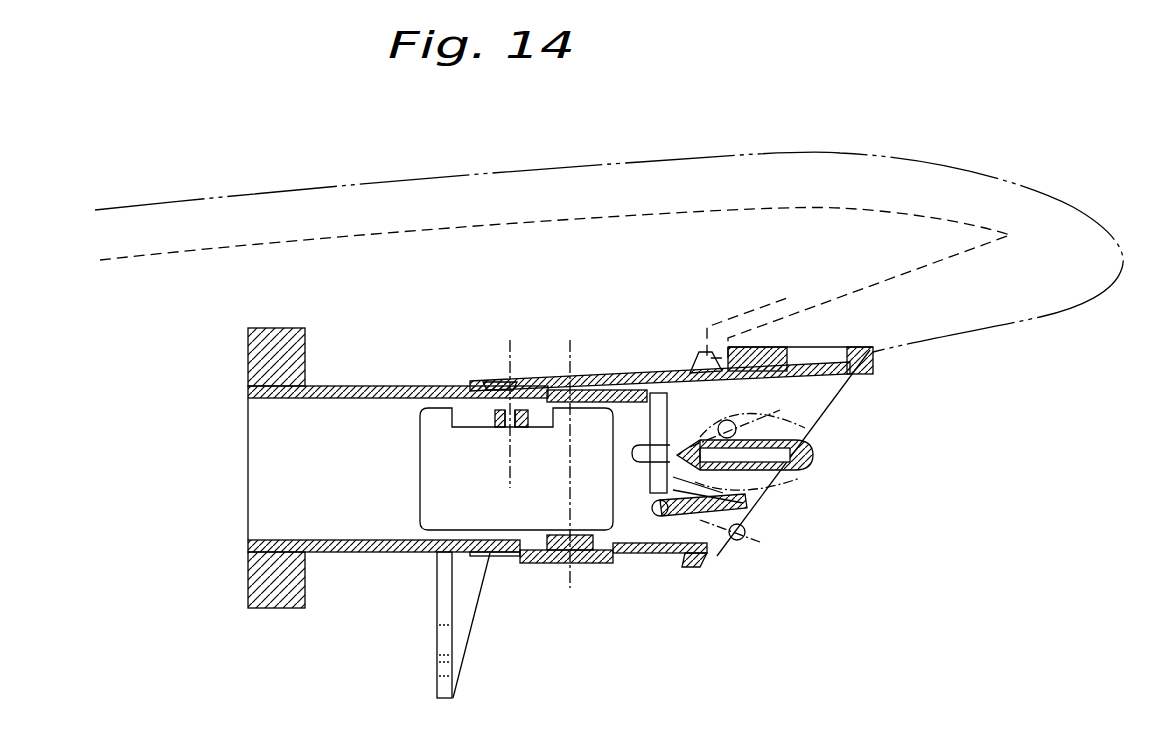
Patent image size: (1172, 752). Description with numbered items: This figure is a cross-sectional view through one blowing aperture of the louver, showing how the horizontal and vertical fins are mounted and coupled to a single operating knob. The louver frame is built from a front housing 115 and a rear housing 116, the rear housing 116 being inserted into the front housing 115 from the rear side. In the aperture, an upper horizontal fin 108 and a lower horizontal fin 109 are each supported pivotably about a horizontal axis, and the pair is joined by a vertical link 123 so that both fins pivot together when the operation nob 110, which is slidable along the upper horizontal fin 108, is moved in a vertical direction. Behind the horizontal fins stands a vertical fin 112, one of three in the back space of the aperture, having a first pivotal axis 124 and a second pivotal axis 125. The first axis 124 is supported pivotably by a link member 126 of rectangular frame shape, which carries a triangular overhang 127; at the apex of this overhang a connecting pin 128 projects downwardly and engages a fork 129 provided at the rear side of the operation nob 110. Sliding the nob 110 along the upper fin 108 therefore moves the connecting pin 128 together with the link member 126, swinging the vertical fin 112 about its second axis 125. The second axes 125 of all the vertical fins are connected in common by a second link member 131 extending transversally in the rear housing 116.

The upper horizontal fin 108 is at (745, 475).
The lower horizontal fin 109 is at (753, 520).
The operation nob 110 is at (810, 457).
The vertical fin 112 is at (420, 447).
The front housing 115 is at (670, 557).
The rear housing 116 is at (340, 386).
The vertical link 123 is at (727, 410).
The first pivotal axis 124 is at (570, 345).
The second pivotal axis 125 is at (510, 345).
The link member 126 is at (597, 380).
The triangular overhang 127 is at (632, 378).
The connecting pin 128 is at (641, 468).
The fork 129 is at (636, 465).
The second link member 131 is at (493, 415).